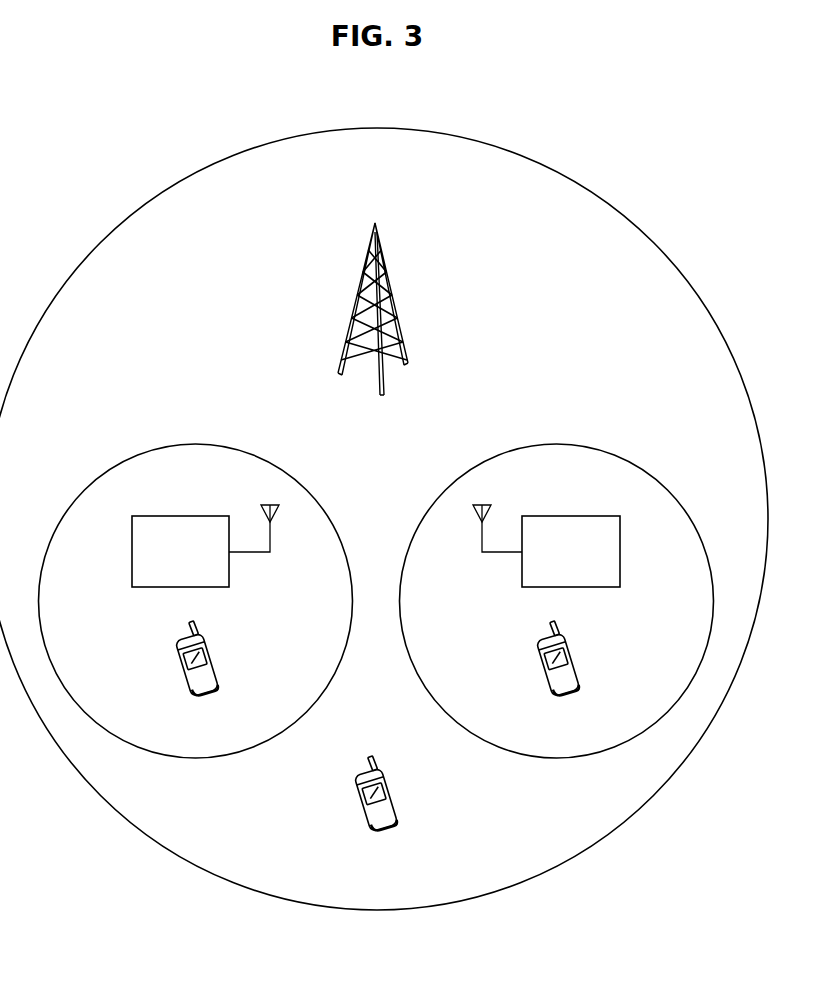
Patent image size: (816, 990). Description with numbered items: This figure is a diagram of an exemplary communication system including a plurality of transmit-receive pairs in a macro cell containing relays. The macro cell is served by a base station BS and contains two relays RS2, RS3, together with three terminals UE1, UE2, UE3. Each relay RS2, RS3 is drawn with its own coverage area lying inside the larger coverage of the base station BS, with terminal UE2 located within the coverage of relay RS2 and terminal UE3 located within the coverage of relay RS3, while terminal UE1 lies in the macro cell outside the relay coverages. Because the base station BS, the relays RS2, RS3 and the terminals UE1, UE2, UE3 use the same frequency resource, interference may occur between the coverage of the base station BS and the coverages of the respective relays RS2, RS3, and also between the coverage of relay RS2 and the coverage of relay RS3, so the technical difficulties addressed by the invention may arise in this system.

The base station BS is at (388, 309).
The relay RS2 is at (205, 546).
The relay RS3 is at (546, 546).
The terminal UE1 is at (378, 811).
The terminal UE2 is at (200, 676).
The terminal UE3 is at (560, 676).